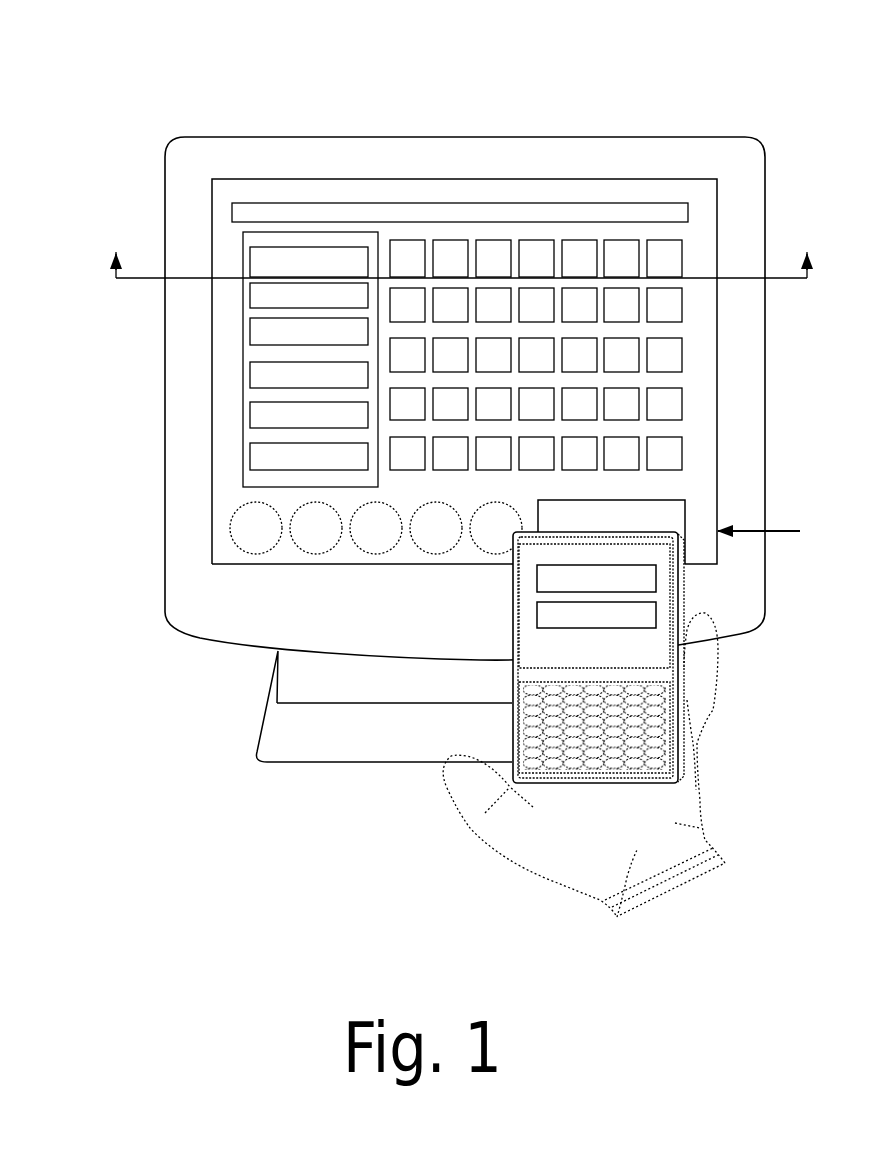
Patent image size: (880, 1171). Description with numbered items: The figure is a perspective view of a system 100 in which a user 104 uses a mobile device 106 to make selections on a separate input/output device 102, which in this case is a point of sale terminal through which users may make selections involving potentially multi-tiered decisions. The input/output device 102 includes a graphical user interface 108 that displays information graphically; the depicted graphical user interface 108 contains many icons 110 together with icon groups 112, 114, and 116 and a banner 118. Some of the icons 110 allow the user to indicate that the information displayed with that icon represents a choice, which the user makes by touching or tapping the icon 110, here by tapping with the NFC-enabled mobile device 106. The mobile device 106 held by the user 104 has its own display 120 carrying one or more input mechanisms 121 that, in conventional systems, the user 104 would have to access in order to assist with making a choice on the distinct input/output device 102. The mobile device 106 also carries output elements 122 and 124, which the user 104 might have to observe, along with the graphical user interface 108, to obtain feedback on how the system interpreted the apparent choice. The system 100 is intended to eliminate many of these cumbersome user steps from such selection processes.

The system 100 is at (461, 459).
The input/output device 102 is at (185, 135).
The user 104 is at (525, 868).
The mobile device 106 is at (539, 657).
The graphical user interface 108 is at (386, 138).
The icon 110 is at (645, 500).
The icon group 112 is at (235, 560).
The icon group 114 is at (698, 332).
The icon group 116 is at (198, 324).
The banner 118 is at (232, 203).
The display 120 is at (539, 630).
The input mechanism 121 is at (680, 709).
The output element 122 is at (218, 598).
The output element 124 is at (660, 622).